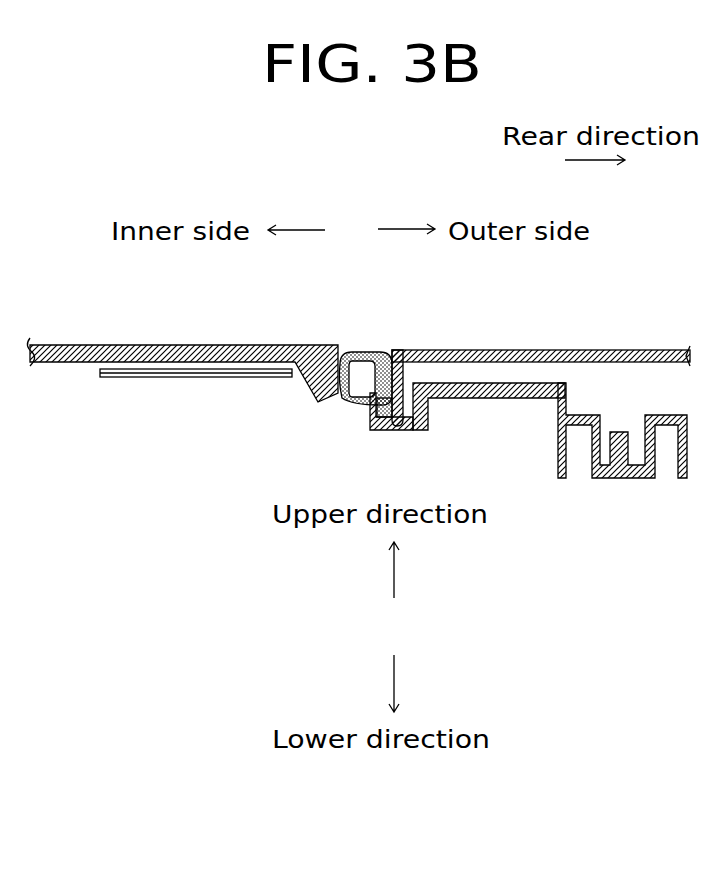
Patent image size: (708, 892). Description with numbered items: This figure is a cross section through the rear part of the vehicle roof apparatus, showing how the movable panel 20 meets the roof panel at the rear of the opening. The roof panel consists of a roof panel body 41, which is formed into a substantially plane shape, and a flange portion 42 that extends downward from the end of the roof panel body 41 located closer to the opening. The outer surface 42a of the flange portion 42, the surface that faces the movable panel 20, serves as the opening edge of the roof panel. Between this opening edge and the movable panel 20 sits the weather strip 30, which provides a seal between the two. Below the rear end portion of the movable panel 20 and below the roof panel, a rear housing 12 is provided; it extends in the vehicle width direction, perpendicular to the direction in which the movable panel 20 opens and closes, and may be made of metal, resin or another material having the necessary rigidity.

The movable panel 20 is at (250, 350).
The weather strip 30 is at (351, 317).
The roof panel body 41 is at (484, 350).
The flange portion 42 is at (410, 374).
The outer surface of the flange portion 42a is at (372, 418).
The rear housing 12 is at (558, 466).